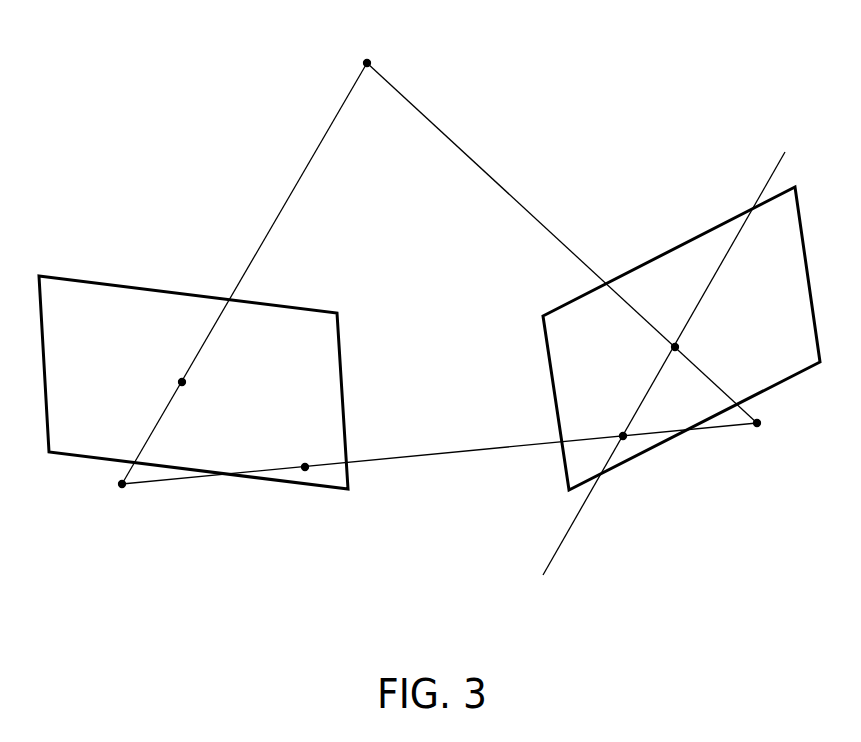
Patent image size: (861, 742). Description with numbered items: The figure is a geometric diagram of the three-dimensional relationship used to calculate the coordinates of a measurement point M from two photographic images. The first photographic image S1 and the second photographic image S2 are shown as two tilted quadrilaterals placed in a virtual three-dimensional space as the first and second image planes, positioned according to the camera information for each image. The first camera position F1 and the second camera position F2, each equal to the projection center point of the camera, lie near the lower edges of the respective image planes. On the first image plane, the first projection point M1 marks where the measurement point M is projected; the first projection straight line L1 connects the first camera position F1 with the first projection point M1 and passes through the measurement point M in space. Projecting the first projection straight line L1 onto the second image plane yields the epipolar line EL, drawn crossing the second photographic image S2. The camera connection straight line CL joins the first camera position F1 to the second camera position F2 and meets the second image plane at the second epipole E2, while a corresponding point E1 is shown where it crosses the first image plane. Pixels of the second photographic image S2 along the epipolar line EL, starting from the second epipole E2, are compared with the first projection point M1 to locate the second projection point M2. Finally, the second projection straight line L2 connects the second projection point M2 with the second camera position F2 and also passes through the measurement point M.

The measurement point M is at (380, 49).
The first projection point M1 is at (203, 382).
The second projection point M2 is at (697, 349).
The first camera position F1 is at (121, 505).
The second camera position F2 is at (773, 436).
The epipole in first image E1 is at (299, 453).
The second epipole E2 is at (611, 423).
The first projection straight line L1 is at (244, 273).
The second projection straight line L2 is at (562, 243).
The camera connection straight line CL is at (453, 453).
The epipolar line EL is at (565, 537).
The first photographic image S1 is at (302, 485).
The second photographic image S2 is at (562, 463).